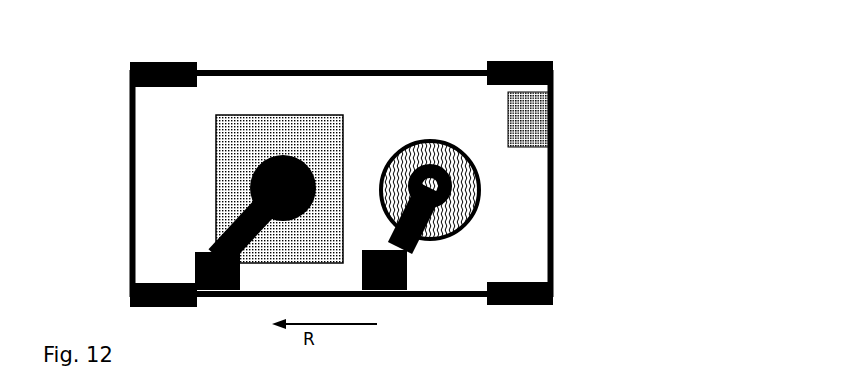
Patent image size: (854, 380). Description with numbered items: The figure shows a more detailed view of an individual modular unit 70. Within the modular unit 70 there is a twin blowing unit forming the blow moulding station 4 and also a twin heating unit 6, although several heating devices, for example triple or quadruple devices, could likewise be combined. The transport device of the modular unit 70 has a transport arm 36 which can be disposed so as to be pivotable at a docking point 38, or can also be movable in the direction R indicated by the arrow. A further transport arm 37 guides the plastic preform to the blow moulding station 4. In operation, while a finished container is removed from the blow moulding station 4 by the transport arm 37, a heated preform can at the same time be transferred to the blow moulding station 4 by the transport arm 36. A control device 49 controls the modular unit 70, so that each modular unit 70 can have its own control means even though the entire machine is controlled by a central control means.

The blow moulding station 4 is at (248, 122).
The twin heating unit 6 is at (422, 150).
The transport arm 36 is at (408, 254).
The further transport arm 37 is at (216, 239).
The docking point 38 is at (388, 295).
The control device 49 is at (552, 124).
The modular unit 70 is at (188, 136).